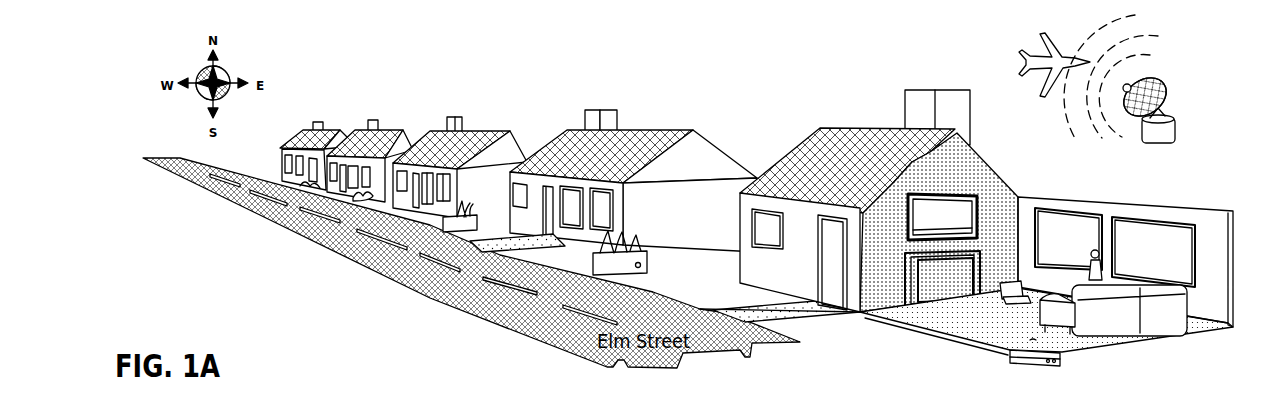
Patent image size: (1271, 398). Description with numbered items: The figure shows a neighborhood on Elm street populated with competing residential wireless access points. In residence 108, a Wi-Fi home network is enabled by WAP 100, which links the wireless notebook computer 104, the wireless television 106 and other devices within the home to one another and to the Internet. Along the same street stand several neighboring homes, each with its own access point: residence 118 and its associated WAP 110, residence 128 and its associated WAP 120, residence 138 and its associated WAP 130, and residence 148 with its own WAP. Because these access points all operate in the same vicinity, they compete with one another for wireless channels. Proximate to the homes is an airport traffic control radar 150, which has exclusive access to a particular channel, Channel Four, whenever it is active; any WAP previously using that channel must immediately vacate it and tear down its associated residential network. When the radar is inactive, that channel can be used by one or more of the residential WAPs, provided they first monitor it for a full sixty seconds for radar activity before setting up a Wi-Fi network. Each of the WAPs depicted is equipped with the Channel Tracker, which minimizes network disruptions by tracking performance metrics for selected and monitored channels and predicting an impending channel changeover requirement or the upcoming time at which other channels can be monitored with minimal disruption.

The wireless access point 100 is at (1010, 356).
The wireless notebook computer 104 is at (1017, 298).
The wireless television 106 is at (922, 197).
The residence 108 is at (950, 130).
The wireless access point 110 is at (643, 258).
The residence 118 is at (600, 138).
The wireless access point 120 is at (468, 217).
The residence 128 is at (462, 128).
The wireless access point 130 is at (362, 196).
The residence 138 is at (378, 128).
The residence 148 is at (324, 127).
The airport traffic control radar 150 is at (1173, 123).